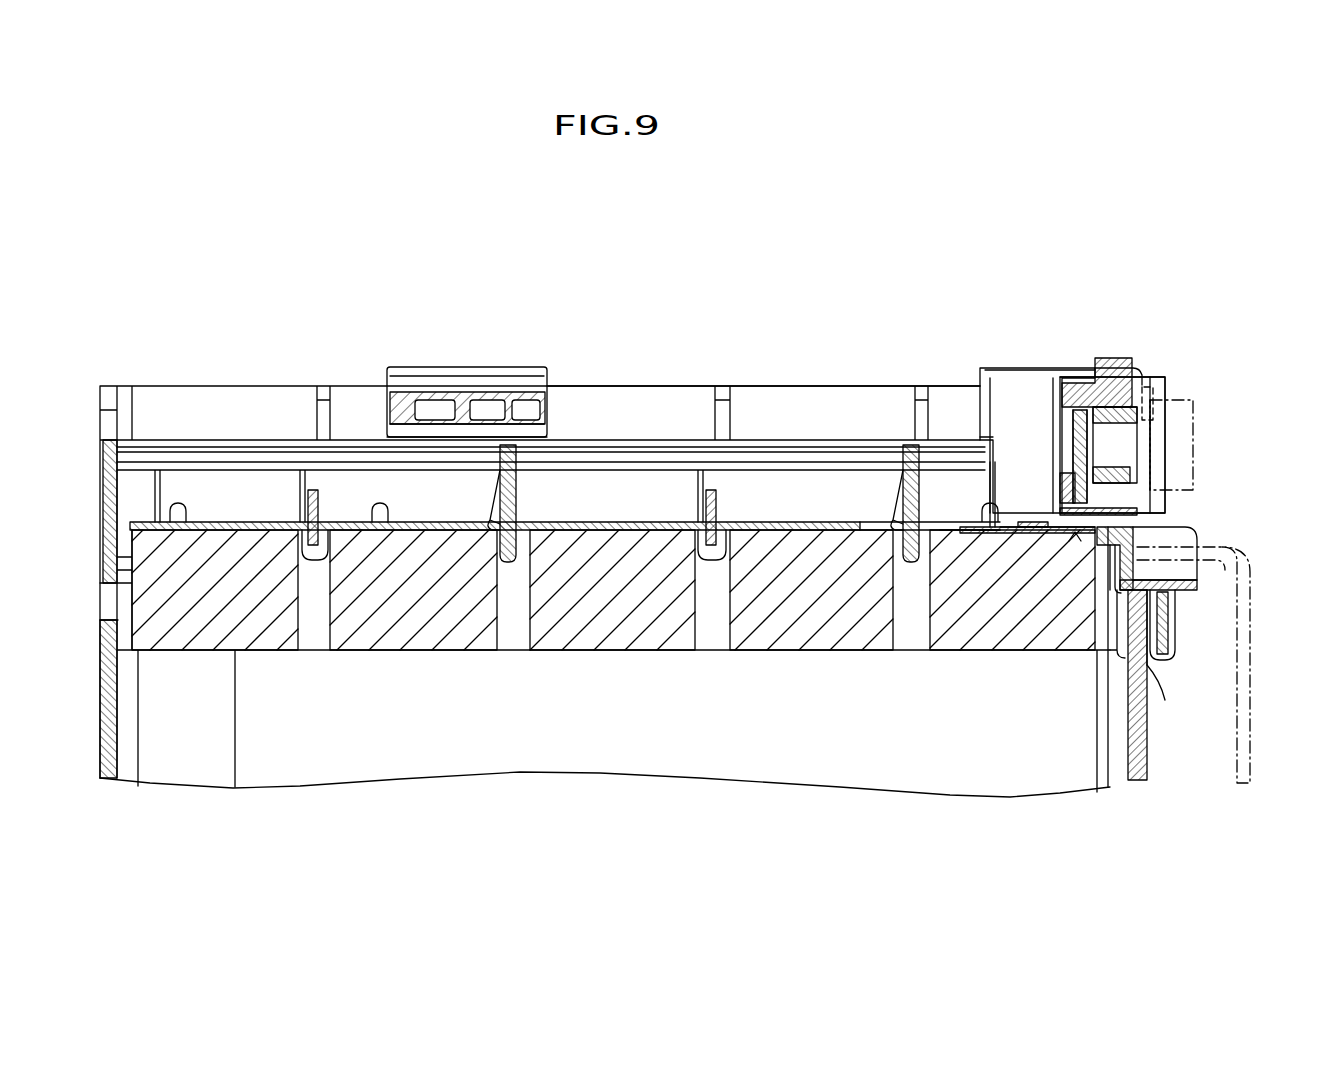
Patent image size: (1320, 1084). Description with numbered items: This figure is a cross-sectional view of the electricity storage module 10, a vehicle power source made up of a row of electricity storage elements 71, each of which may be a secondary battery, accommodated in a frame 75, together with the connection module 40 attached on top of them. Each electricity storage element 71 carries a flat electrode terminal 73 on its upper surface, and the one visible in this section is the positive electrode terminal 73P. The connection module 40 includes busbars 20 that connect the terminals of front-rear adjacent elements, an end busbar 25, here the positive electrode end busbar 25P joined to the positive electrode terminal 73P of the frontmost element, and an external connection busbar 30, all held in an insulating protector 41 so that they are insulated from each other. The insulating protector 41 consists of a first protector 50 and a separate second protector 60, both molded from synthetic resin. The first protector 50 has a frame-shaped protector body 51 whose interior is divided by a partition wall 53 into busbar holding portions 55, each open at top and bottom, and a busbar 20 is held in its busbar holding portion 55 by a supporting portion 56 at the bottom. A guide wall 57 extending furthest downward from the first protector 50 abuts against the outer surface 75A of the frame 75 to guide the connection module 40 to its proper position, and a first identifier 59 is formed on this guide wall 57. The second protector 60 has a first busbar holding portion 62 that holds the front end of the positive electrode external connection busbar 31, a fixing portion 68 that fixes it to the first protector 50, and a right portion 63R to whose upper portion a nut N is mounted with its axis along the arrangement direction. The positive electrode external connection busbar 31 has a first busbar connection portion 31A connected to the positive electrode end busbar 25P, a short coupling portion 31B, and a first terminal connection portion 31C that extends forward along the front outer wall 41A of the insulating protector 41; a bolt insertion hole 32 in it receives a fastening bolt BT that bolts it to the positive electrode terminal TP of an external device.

The electricity storage module 10 is at (811, 303).
The busbar 20 is at (205, 520).
The end busbar 25 is at (972, 416).
The positive electrode end busbar 25P is at (960, 520).
The external connection busbar 30 is at (1102, 620).
The positive electrode external connection busbar 31 is at (1112, 560).
The first busbar connection portion 31A is at (1075, 535).
The short coupling portion 31B is at (1120, 487).
The first terminal connection portion 31C is at (1135, 385).
The bolt insertion hole 32 is at (1150, 428).
The connection module 40 is at (521, 305).
The insulating protector 41 is at (1045, 232).
The front outer wall 41A is at (1135, 368).
The first protector 50 is at (763, 312).
The protector body 51 is at (700, 398).
The partition wall 53 is at (518, 445).
The busbar holding portion 55 is at (356, 493).
The supporting portion 56 is at (752, 528).
The guide wall 57 is at (1167, 655).
The first identifier 59 is at (1168, 610).
The second protector 60 is at (1050, 348).
The first busbar holding portion 62 is at (1128, 341).
The right portion 63R is at (1120, 365).
The fixing portion 68 is at (441, 392).
The electricity storage element 71 is at (275, 635).
The electrode terminal 73 is at (612, 699).
The positive electrode terminal 73P is at (176, 525).
The frame 75 is at (1150, 745).
The outer surface 75A is at (1147, 683).
The nut N is at (1110, 408).
The fastening bolt BT is at (1195, 463).
The positive electrode terminal TP is at (1248, 694).